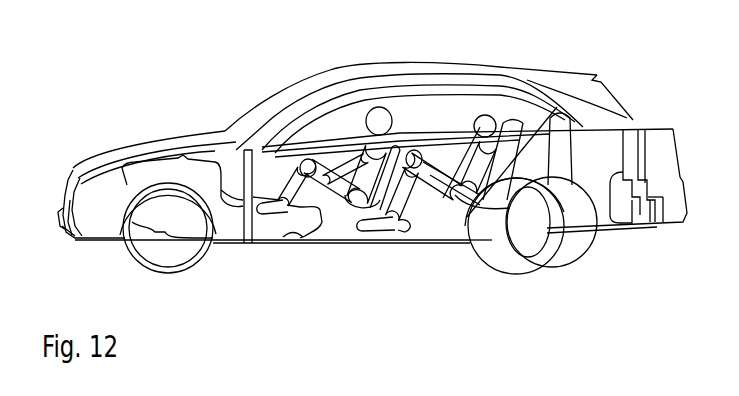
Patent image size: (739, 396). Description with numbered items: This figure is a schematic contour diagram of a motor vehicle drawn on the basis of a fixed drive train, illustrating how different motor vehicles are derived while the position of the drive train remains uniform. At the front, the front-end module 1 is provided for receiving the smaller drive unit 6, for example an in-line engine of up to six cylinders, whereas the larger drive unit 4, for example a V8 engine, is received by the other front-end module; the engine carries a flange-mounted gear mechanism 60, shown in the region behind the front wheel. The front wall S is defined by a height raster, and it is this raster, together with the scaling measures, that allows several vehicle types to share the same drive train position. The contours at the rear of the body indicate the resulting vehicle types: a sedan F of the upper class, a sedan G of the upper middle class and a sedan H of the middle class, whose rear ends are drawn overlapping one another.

The front-end module 1 is at (372, 168).
The drive unit 4 is at (219, 254).
The drive unit 6 is at (219, 254).
The gear mechanism 60 is at (226, 222).
The front wall S is at (253, 248).
The sedan of the upper class F is at (654, 129).
The sedan of the middle class H is at (626, 220).
The sedan of the upper middle class G is at (660, 229).